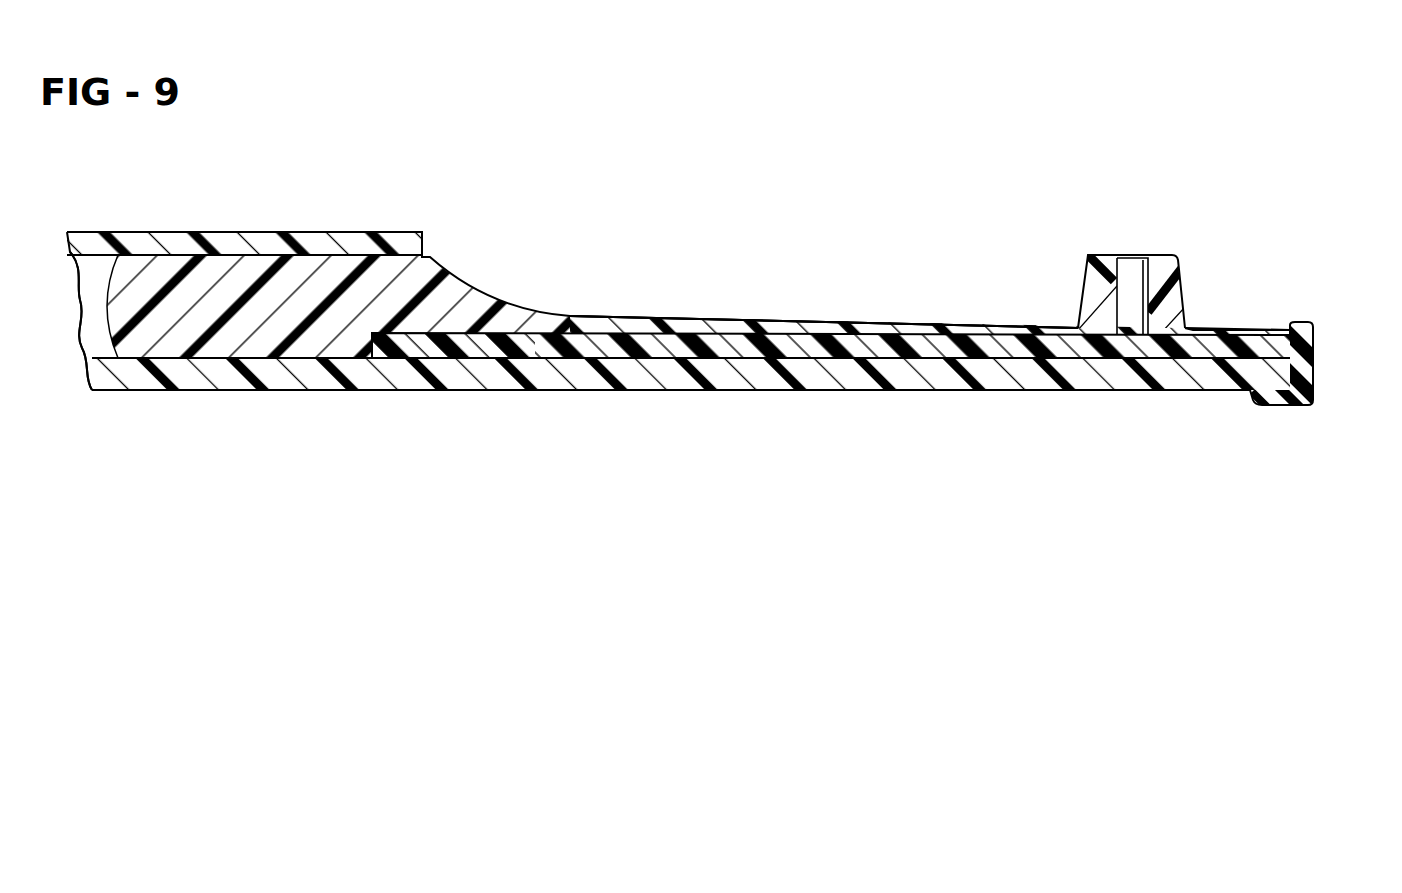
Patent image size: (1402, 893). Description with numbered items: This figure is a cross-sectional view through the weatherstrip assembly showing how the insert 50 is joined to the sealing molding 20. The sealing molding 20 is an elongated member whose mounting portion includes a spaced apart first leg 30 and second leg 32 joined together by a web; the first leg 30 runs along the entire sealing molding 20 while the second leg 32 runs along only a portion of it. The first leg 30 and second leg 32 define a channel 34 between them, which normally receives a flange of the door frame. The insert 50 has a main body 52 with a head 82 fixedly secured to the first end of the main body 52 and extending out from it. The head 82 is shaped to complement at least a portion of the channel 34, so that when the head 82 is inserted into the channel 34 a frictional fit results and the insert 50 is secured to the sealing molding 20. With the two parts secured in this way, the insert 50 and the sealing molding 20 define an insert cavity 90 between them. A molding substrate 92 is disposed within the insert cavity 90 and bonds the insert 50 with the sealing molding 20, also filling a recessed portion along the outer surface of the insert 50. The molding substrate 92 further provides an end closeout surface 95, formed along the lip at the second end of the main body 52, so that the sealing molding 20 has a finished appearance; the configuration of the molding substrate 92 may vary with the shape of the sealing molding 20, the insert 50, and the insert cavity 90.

The sealing molding 20 is at (723, 390).
The first leg 30 is at (543, 381).
The second leg 32 is at (212, 237).
The channel 34 is at (118, 352).
The insert 50 is at (722, 302).
The main body 52 is at (822, 328).
The head 82 is at (265, 263).
The insert cavity 90 is at (612, 338).
The molding substrate 92 is at (957, 347).
The end closeout surface 95 is at (1313, 340).